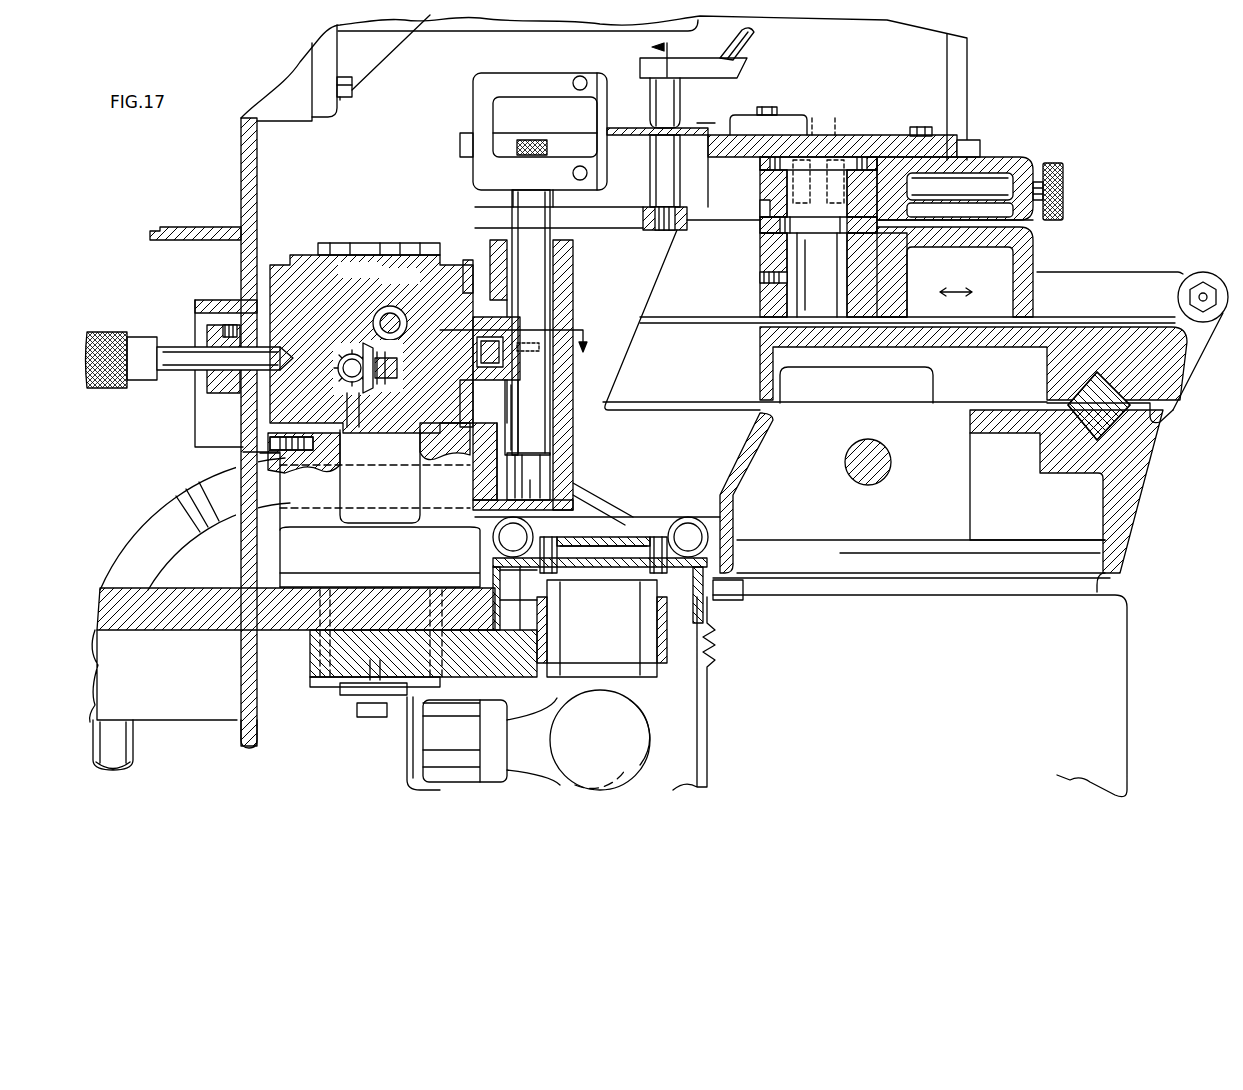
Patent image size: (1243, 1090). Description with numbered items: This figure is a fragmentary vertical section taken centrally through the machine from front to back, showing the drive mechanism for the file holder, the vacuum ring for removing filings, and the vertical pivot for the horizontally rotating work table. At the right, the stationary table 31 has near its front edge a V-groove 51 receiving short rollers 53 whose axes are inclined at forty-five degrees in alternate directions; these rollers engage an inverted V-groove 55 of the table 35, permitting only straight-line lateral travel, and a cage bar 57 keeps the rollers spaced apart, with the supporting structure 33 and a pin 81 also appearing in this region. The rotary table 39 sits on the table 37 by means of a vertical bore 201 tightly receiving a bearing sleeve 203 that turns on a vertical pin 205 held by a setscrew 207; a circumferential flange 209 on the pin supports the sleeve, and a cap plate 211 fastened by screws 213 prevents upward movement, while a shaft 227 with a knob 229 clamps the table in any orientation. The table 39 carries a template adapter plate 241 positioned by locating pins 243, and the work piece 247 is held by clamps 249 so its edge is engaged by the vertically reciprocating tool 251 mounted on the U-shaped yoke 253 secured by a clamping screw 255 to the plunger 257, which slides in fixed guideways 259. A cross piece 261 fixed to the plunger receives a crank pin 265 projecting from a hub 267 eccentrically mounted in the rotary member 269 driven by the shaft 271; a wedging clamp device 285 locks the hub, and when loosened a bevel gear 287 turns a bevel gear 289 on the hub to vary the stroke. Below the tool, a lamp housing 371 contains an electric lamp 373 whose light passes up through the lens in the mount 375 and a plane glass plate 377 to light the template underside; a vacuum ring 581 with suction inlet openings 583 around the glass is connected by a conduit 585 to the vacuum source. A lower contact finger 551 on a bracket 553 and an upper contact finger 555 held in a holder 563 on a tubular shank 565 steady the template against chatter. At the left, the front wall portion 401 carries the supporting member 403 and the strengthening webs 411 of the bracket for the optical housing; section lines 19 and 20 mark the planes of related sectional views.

The section line 19- 19 is at (685, 82).
The section line 20- 20 is at (511, 335).
The stationary table 31 is at (1135, 530).
The base 33 is at (1125, 676).
The table 35 is at (1037, 371).
The table 37 is at (1035, 262).
The rotary table 39 is at (995, 157).
The V-groove 51 is at (1082, 438).
The rollers 53 is at (1083, 420).
The inverted V-groove 55 is at (1078, 397).
The cage bar 57 is at (1133, 403).
The pin 81 is at (892, 462).
The vertical bore 201 is at (880, 192).
The bearing sleeve 203 is at (760, 200).
The vertical pin 205 is at (790, 258).
The setscrew 207 is at (760, 281).
The circumferential flange 209 is at (762, 229).
The cap plate 211 is at (762, 166).
The screws 213 is at (813, 150).
The shaft 227 is at (1040, 178).
The knob 229 is at (1063, 210).
The template adapter plate 241 is at (880, 126).
The locating pins 243 is at (921, 127).
The work piece 247 is at (628, 128).
The clamps 249 is at (787, 118).
The tool 251 is at (603, 112).
The U-shaped yoke 253 is at (533, 75).
The clamping screw 255 is at (538, 128).
The plunger 257 is at (512, 208).
The guideways 259 is at (575, 270).
The cross piece 261 is at (513, 324).
The crank pin 265 is at (495, 366).
The hub 267 is at (507, 403).
The rotary member 269 is at (352, 298).
The shaft 271 is at (180, 375).
The wedging clamp device 285 is at (393, 306).
The bevel gear 287 is at (355, 400).
The bevel gear 289 is at (375, 388).
The lamp housing 371 is at (710, 730).
The electric lamp 373 is at (653, 752).
The mount 375 is at (642, 678).
The plane glass plate 377 is at (643, 537).
The front wall portion 401 is at (258, 212).
The supporting member 403 is at (295, 113).
The strengthening webs 411 is at (383, 50).
The lower contact finger 551 is at (650, 181).
The bracket 553 is at (680, 232).
The upper contact finger 555 is at (680, 100).
The holder 563 is at (745, 72).
The tubular shank 565 is at (752, 44).
The vacuum ring 581 is at (693, 516).
The suction inlet openings 583 is at (606, 533).
The conduit 585 is at (128, 555).